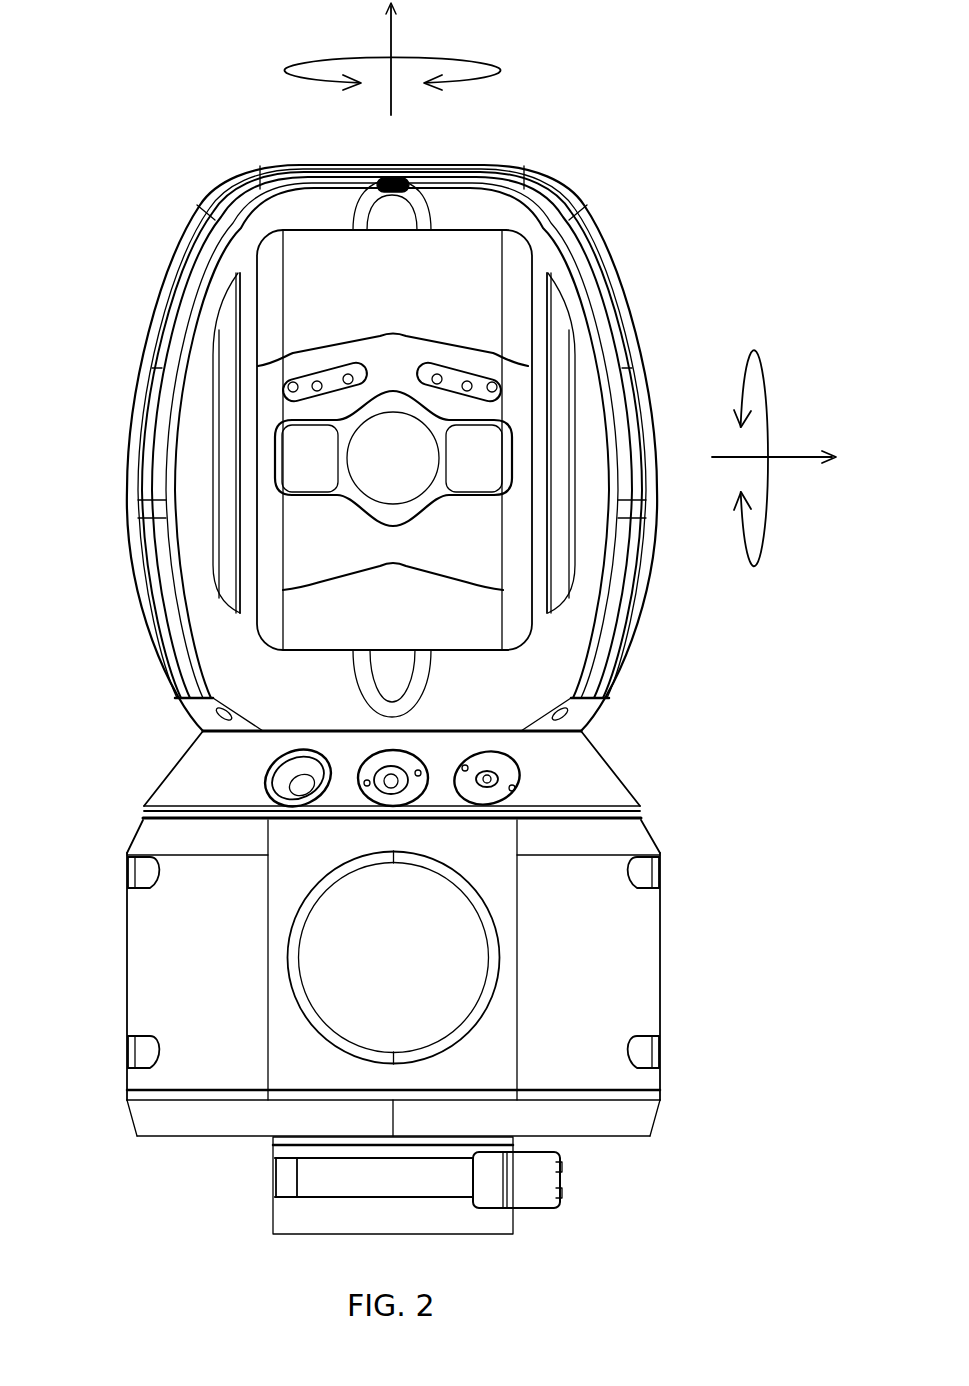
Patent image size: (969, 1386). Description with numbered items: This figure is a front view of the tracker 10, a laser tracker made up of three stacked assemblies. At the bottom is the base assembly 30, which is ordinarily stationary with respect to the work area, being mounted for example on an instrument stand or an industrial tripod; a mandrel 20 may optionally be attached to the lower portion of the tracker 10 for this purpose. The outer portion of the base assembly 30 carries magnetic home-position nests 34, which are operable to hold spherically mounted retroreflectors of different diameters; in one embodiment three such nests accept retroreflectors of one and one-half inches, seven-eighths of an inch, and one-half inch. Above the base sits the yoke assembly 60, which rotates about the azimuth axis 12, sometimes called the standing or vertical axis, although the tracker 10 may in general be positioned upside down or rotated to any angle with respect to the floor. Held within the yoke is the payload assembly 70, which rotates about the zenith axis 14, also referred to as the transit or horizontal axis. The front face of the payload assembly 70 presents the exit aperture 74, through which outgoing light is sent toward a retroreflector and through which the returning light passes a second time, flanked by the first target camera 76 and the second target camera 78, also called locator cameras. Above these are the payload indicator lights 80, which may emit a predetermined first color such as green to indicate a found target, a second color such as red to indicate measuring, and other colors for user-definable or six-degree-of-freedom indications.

The tracker 10 is at (182, 155).
The azimuth axis 12 is at (393, 27).
The zenith axis 14 is at (803, 455).
The mandrel 20 is at (600, 1182).
The base assembly 30 is at (690, 945).
The magnetic home-position nests 34 is at (248, 782).
The yoke assembly 60 is at (135, 337).
The payload assembly 70 is at (310, 283).
The exit aperture 74 is at (392, 462).
The first target camera 76 is at (305, 466).
The second target camera 78 is at (475, 462).
The payload indicator lights 80 is at (262, 372).